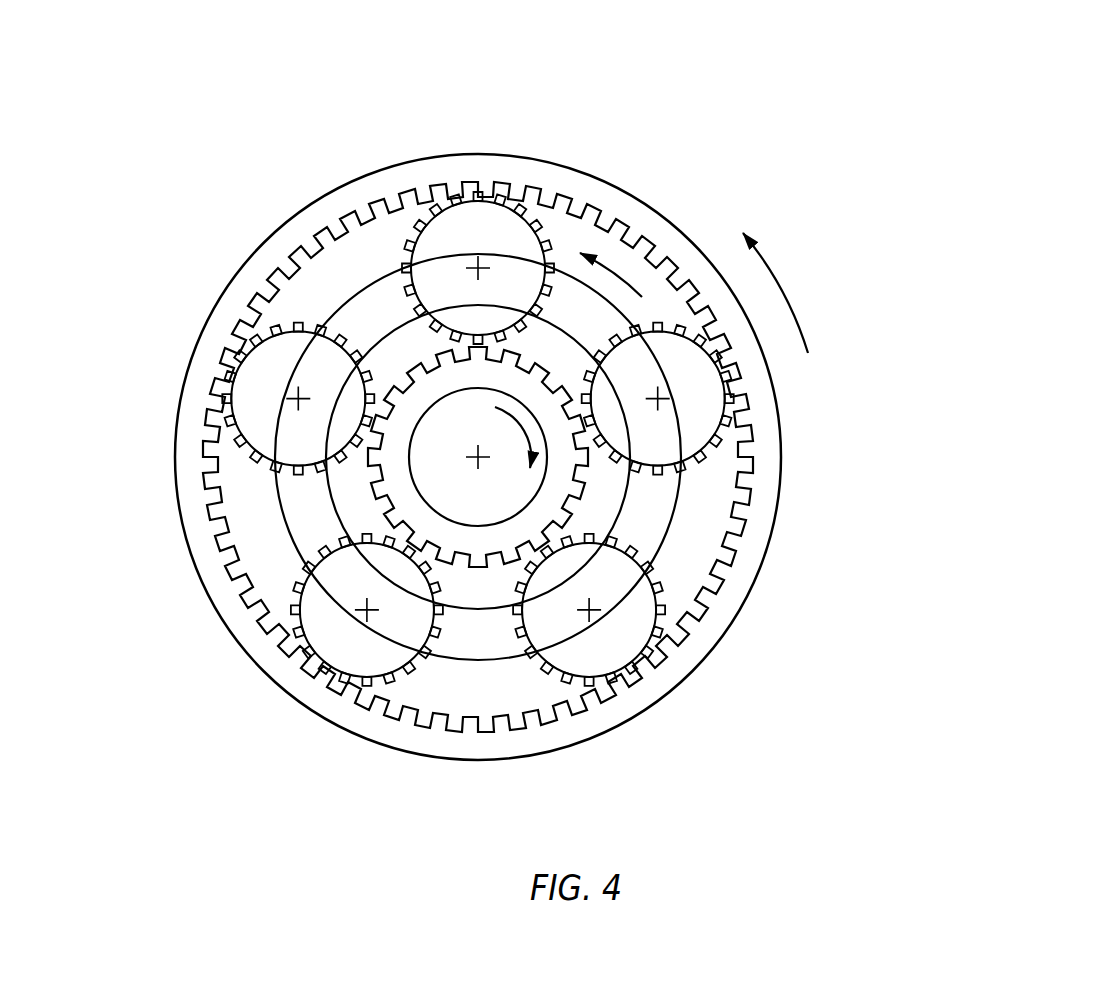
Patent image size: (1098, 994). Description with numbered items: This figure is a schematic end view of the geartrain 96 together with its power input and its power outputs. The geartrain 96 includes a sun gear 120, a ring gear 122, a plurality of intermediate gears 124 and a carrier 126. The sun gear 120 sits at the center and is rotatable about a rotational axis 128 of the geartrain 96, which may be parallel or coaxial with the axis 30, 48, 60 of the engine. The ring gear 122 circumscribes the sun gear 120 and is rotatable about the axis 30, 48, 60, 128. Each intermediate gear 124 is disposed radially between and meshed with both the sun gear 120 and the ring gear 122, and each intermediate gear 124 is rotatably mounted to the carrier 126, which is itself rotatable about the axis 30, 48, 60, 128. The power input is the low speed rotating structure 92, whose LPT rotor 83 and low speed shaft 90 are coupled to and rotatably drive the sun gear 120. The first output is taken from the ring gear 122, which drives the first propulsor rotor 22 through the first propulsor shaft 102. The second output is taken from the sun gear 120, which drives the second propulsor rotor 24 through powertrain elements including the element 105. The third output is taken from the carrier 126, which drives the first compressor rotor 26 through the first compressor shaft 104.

The geartrain 96 is at (678, 130).
The ring gear 122 is at (634, 412).
The carrier 126 is at (680, 409).
The sun gear 120 is at (618, 491).
The intermediate gears 124 is at (628, 431).
The axis 30 is at (472, 601).
The axis 48 is at (472, 601).
The core axis 60 is at (472, 601).
The rotational axis 128 is at (480, 460).
The first propulsor rotor 22 is at (634, 412).
The first propulsor shaft 102 is at (445, 152).
The first compressor rotor 26 is at (680, 409).
The first compressor shaft 104 is at (360, 290).
The LPT rotor 83 is at (618, 491).
The low speed shaft 90 is at (618, 491).
The low speed rotating structure 92 is at (377, 495).
The second propulsor rotor 24 is at (803, 637).
The powertrain element 105 is at (605, 535).